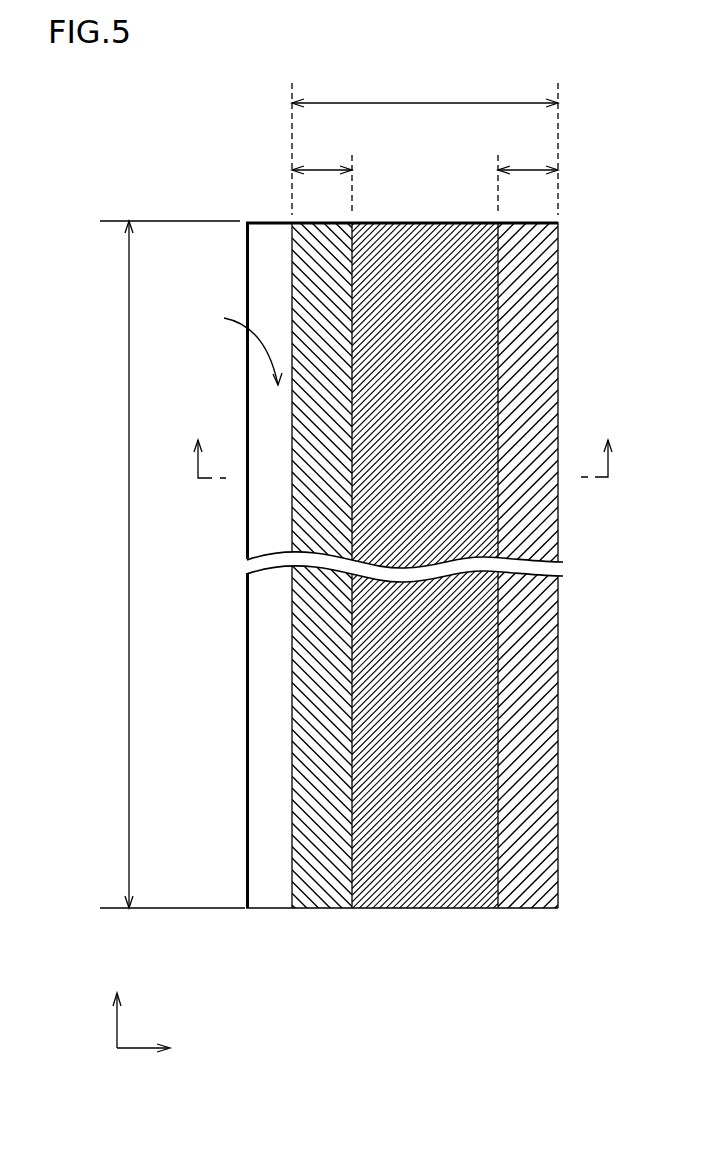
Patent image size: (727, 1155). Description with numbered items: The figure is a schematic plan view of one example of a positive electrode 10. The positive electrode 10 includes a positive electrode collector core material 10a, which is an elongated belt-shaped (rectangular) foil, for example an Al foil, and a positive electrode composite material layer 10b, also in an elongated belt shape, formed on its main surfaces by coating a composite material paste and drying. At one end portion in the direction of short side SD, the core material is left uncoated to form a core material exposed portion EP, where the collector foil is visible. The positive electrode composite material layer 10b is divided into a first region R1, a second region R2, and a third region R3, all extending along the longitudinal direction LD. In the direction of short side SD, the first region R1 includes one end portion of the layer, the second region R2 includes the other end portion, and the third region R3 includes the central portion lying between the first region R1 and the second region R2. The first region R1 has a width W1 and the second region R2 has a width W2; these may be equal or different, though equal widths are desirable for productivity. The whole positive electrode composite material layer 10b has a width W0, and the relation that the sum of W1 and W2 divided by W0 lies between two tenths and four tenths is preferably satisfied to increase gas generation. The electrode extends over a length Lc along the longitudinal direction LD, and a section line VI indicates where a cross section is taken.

The positive electrode 10 is at (403, 564).
The positive electrode collector core material 10a is at (270, 898).
The positive electrode composite material layer 10b is at (425, 564).
The first region R1 is at (320, 898).
The second region R2 is at (528, 570).
The third region R3 is at (423, 898).
The core material exposed portion EP is at (240, 344).
The width of positive electrode composite material layer W0 is at (425, 144).
The width of first region W1 is at (322, 174).
The width of second region W2 is at (528, 174).
The length Lc is at (170, 564).
The section line VI- VI is at (402, 459).
The longitudinal direction LD is at (116, 1027).
The direction of short side SD is at (141, 1050).